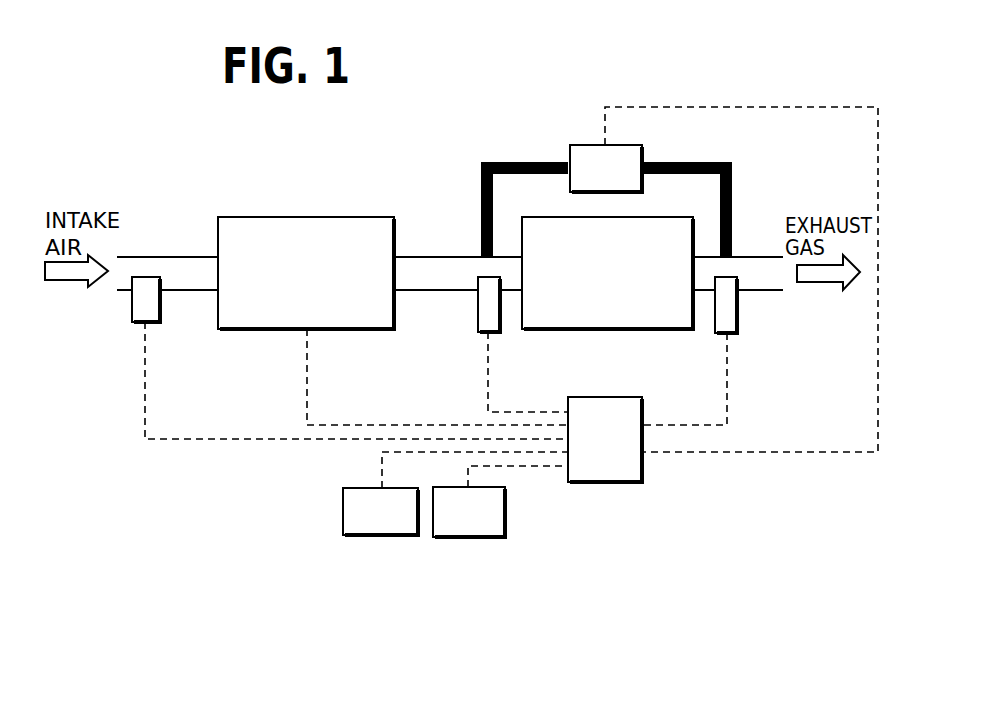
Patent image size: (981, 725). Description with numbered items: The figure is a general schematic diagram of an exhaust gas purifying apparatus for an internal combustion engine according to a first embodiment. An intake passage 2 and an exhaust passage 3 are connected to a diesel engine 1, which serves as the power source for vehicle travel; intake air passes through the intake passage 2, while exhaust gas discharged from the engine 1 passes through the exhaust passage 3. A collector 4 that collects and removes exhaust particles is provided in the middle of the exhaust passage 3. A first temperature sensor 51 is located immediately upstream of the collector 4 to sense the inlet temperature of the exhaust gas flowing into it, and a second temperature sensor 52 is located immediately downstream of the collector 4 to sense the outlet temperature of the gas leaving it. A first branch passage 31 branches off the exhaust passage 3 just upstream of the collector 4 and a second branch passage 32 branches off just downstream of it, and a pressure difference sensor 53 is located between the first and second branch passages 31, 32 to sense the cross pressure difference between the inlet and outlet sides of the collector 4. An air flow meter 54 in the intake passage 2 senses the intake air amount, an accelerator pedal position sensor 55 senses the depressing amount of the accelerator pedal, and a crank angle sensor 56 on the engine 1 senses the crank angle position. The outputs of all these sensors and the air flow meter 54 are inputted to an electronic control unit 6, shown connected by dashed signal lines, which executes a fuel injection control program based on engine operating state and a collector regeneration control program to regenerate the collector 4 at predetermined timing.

The diesel engine 1 is at (307, 217).
The intake passage 2 is at (190, 268).
The exhaust passage 3 is at (427, 265).
The collector 4 is at (612, 330).
The electronic control unit 6 is at (642, 470).
The first branch passage 31 is at (482, 177).
The second branch passage 32 is at (732, 175).
The first temperature sensor 51 is at (487, 310).
The second temperature sensor 52 is at (725, 313).
The pressure difference sensor 53 is at (590, 155).
The air flow meter 54 is at (132, 313).
The accelerator pedal position sensor 55 is at (490, 510).
The crank angle sensor 56 is at (358, 510).